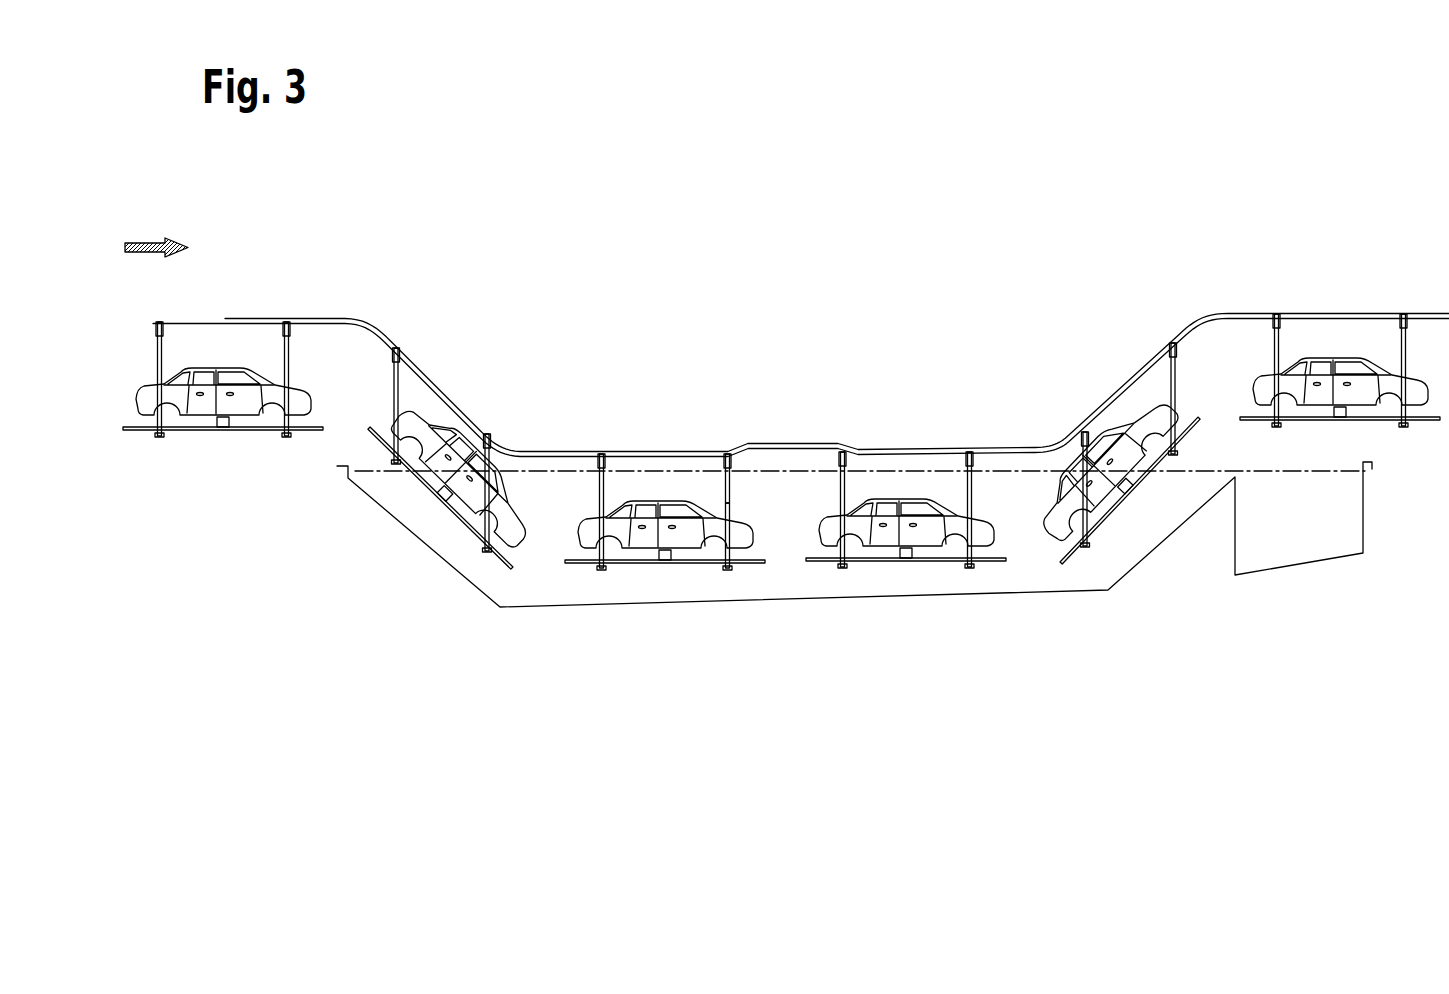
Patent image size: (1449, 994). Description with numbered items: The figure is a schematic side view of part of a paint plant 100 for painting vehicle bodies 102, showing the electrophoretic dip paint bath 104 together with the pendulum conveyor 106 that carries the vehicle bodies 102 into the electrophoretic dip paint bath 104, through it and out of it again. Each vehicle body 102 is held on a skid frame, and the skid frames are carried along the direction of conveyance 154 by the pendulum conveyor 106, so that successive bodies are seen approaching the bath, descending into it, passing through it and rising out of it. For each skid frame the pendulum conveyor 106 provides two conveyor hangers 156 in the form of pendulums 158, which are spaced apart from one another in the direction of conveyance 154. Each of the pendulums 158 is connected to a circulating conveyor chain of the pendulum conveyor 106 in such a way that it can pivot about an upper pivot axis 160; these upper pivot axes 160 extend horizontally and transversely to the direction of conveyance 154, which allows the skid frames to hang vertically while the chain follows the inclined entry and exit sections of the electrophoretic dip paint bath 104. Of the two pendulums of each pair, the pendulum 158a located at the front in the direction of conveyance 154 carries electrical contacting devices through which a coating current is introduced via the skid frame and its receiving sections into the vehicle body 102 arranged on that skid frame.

The paint plant 100 is at (1374, 272).
The vehicle body 102 is at (223, 335).
The electrophoretic dip paint bath 104 is at (429, 558).
The pendulum conveyor 106 is at (1237, 296).
The direction of conveyance 154 is at (143, 243).
The conveyor hanger 156 is at (398, 385).
The pendulum 158 is at (603, 490).
The front pendulum 158a is at (731, 503).
The upper pivot axis 160 is at (599, 458).